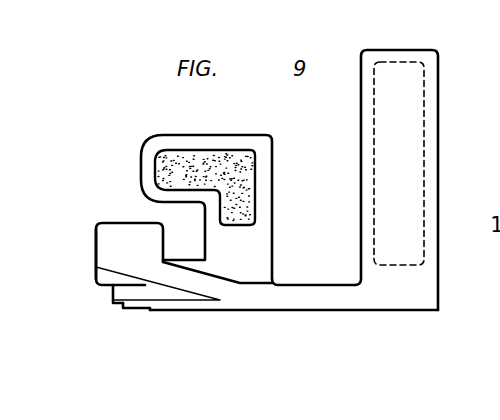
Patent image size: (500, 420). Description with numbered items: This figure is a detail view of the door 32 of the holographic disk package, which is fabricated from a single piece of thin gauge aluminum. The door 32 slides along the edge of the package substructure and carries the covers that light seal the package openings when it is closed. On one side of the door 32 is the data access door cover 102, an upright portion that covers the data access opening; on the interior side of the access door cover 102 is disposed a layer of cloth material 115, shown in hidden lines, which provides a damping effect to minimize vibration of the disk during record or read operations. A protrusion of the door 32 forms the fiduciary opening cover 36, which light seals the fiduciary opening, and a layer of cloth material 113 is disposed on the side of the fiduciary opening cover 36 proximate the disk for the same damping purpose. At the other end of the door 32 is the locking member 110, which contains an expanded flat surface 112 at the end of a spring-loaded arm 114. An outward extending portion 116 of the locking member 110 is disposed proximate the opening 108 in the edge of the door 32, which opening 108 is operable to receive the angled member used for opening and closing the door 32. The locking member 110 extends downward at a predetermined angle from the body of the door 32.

The door 32 is at (388, 333).
The fiduciary opening cover portion 36 is at (154, 152).
The data access door cover 102 is at (430, 77).
The opening 108 is at (138, 308).
The locking member 110 is at (95, 258).
The expanded flat surface 112 is at (120, 232).
The layer of cloth material 113 is at (227, 153).
The spring-loaded arm 114 is at (180, 280).
The layer of cloth material 115 is at (403, 62).
The outward extending portion 116 is at (107, 280).